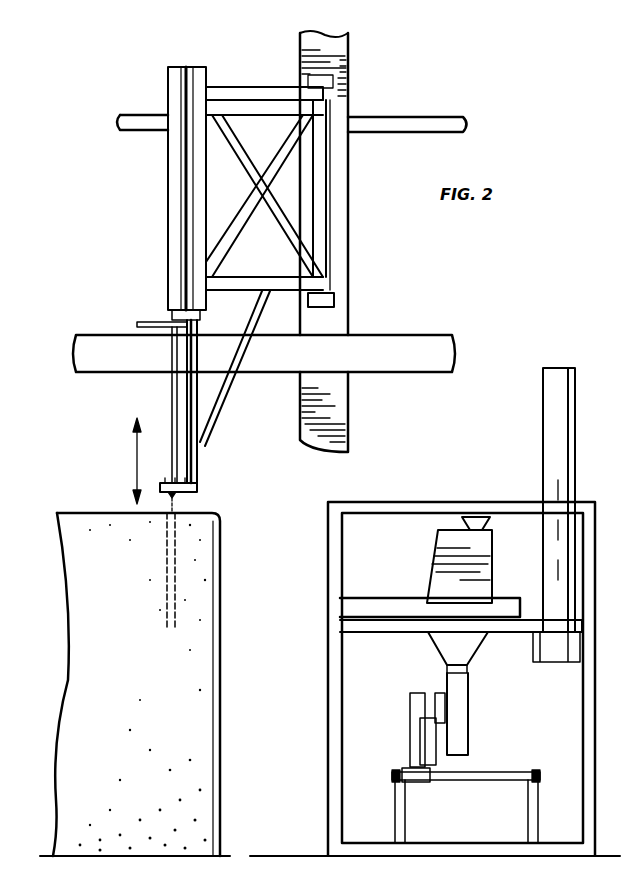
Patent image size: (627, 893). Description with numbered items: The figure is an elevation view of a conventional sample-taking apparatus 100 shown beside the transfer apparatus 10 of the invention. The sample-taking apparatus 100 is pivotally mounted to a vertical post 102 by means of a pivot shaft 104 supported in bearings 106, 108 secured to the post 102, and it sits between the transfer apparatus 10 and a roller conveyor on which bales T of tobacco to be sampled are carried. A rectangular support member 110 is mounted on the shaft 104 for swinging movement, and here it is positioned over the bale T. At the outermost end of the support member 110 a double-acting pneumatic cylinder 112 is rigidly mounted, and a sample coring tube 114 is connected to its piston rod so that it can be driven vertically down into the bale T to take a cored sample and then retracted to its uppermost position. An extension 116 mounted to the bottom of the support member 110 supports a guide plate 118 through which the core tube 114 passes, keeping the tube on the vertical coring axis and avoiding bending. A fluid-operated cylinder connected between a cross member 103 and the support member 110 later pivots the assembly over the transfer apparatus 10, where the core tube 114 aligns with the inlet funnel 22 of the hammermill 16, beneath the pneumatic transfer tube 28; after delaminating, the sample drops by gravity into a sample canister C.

The sample-taking apparatus 100 is at (92, 192).
The rectangular support member 110 is at (237, 92).
The bearing 106 is at (332, 85).
The cross member 103 is at (420, 115).
The pneumatic cylinder 112 is at (168, 222).
The pivot shaft 104 is at (327, 220).
The bearing 108 is at (335, 299).
The vertical post 102 is at (332, 331).
The sample coring tube 114 is at (172, 390).
The extension 116 is at (200, 446).
The guide plate 118 is at (180, 494).
The bale of tobacco T is at (190, 652).
The transfer apparatus 10 is at (320, 594).
The pneumatic transfer tube 28 is at (577, 401).
The inlet funnel 22 is at (478, 516).
The hammermill 16 is at (427, 572).
The sample canister C is at (460, 715).